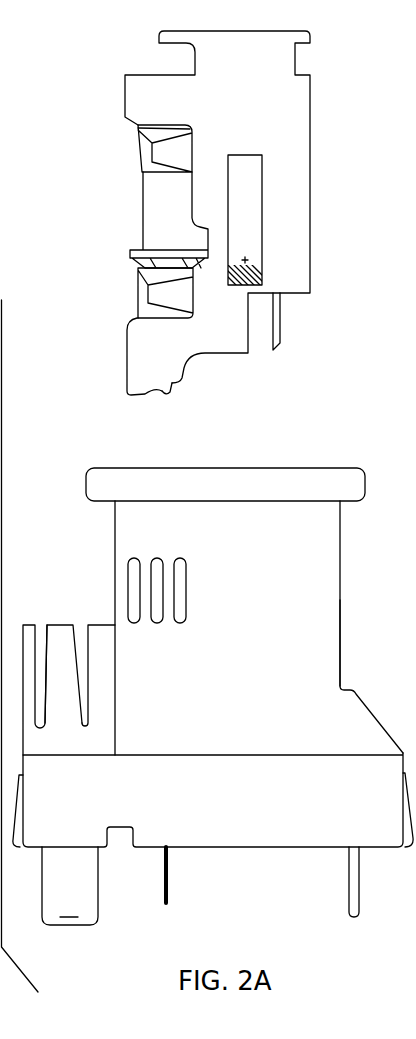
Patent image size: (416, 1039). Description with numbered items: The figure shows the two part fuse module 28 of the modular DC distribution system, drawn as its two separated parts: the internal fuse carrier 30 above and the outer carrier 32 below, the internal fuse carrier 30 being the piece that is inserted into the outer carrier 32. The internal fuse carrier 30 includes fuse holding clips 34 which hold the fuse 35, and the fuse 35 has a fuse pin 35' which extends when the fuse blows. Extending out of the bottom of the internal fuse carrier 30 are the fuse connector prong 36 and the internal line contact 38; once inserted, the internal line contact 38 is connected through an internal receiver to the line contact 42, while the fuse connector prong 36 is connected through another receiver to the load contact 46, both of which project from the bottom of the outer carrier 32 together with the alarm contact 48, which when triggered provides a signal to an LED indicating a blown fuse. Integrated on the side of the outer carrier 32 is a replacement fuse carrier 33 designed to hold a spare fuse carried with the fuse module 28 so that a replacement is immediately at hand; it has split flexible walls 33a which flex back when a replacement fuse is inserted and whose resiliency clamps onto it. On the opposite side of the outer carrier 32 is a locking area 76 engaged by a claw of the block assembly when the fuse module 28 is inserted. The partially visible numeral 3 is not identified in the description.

The internal fuse carrier 30 is at (290, 113).
The outer carrier 32 is at (328, 585).
The replacement fuse carrier 33 is at (66, 651).
The split flexible walls 33a is at (62, 620).
The fuse holding clips 34 is at (155, 297).
The fuse 35 is at (140, 220).
The fuse pin 35' is at (131, 141).
The fuse connector prong 36 is at (167, 396).
The internal line contact 38 is at (276, 350).
The line contact 42 is at (363, 898).
The load contact 46 is at (90, 912).
The alarm contact 48 is at (170, 887).
The locking area 76 is at (415, 652).
The fuse module 28 is at (406, 318).
The component 3 is at (411, 425).